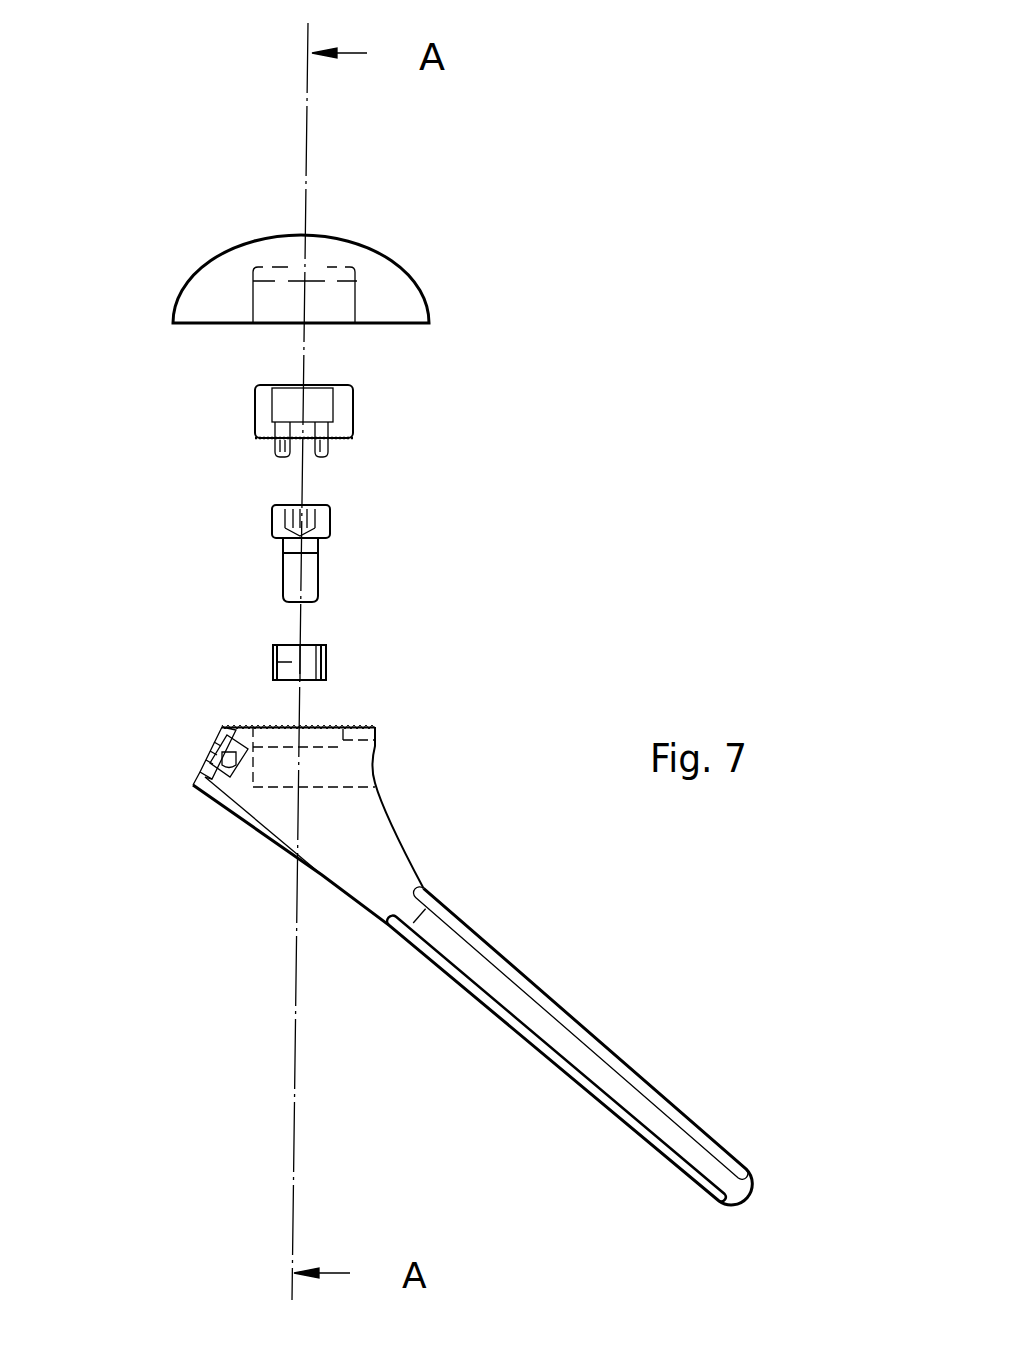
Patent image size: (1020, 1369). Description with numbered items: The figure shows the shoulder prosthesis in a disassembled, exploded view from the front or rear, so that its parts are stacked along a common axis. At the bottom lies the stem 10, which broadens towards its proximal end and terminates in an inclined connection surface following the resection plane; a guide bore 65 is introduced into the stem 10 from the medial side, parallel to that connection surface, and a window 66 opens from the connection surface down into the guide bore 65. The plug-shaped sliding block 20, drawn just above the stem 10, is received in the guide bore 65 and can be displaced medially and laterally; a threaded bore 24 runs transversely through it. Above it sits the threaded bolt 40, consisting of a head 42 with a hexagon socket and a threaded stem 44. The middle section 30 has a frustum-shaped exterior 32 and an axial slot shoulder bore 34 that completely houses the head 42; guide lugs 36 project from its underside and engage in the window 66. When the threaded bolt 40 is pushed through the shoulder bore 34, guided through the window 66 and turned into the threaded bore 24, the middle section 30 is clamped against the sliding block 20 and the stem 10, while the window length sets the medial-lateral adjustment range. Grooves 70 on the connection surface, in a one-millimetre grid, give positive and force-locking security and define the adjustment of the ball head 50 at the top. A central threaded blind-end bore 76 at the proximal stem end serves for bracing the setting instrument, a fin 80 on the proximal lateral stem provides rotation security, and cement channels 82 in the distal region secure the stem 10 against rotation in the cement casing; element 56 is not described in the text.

The stem 10 is at (552, 1032).
The sliding block 20 is at (327, 670).
The threaded bore 24 is at (292, 664).
The middle section 30 is at (341, 407).
The frustum-shaped exterior 32 is at (354, 423).
The shoulder bore 34 is at (283, 412).
The guide lugs 36 is at (320, 454).
The threaded bolt 40 is at (365, 542).
The head 42 is at (325, 514).
The threaded stem 44 is at (312, 586).
The ball head 50 is at (390, 281).
The cap slot 56 is at (348, 308).
The guide bore 65 is at (347, 770).
The window 66 is at (333, 725).
The grooves 70 is at (245, 712).
The central threaded blind-end bore 76 is at (197, 783).
The fin 80 is at (257, 833).
The cement channels 82 is at (482, 1000).